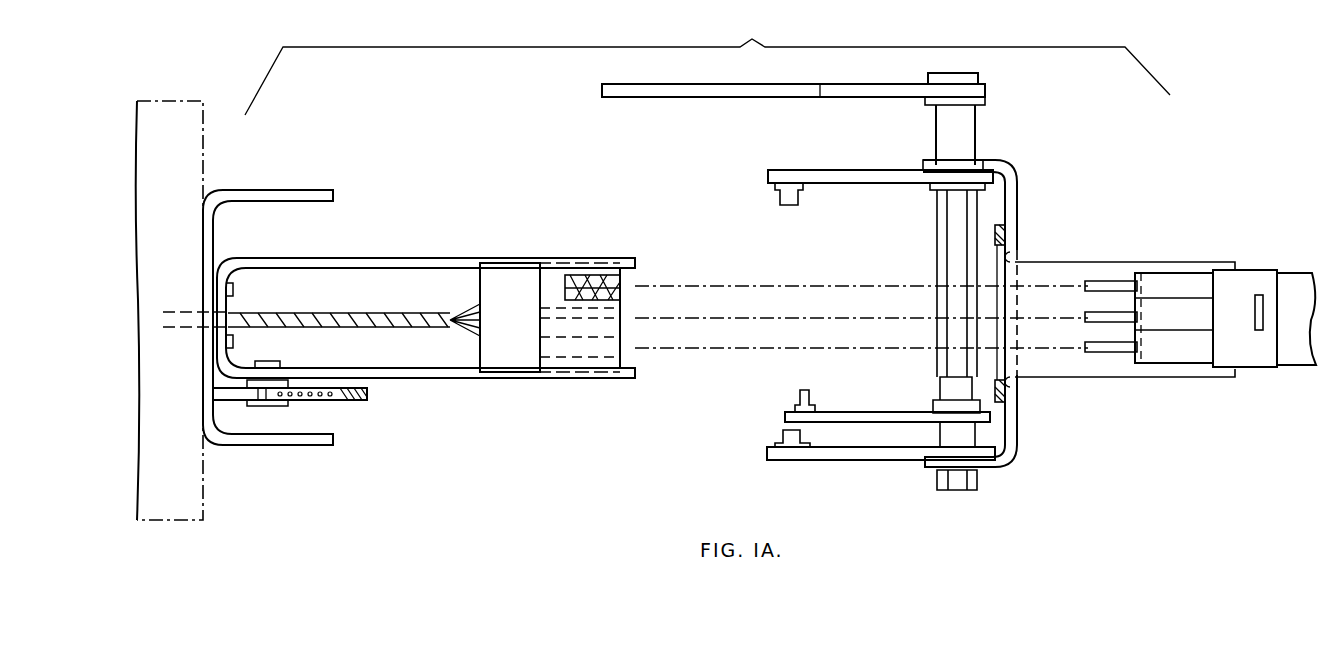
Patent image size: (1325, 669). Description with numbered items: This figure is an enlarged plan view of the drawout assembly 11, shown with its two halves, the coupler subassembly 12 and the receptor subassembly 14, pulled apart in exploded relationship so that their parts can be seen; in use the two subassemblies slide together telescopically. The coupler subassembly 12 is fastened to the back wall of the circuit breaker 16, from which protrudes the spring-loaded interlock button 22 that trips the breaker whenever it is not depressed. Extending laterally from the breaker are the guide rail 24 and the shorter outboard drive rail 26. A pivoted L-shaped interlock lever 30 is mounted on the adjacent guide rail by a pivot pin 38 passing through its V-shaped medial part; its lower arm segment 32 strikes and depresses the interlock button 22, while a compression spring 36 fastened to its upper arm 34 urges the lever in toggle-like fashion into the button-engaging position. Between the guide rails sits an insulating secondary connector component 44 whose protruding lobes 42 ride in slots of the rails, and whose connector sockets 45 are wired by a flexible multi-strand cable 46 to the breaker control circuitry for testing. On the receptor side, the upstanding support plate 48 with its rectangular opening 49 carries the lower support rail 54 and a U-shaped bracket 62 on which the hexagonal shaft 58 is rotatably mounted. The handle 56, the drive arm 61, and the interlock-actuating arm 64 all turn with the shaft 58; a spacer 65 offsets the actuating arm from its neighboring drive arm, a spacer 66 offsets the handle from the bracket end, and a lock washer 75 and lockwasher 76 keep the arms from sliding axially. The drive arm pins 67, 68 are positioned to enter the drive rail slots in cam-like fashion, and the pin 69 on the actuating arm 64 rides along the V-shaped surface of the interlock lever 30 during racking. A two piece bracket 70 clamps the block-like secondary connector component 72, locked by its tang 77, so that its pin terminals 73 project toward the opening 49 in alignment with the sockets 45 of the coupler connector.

The drawout assembly 11 is at (762, 34).
The coupler subassembly 12 is at (442, 258).
The receptor subassembly 14 is at (1020, 191).
The circuit breaker 16 is at (175, 100).
The interlock button 22 is at (210, 392).
The guide rail 24 is at (391, 258).
The drive rail 26 is at (262, 193).
The interlock lever 30 is at (300, 400).
The lower arm segment 32 is at (232, 401).
The upper arm 34 is at (356, 397).
The compression spring 36 is at (300, 389).
The pivot pin 38 is at (270, 362).
The protruding lobes 42 is at (517, 262).
The secondary connector component 44 is at (512, 348).
The connector sockets 45 is at (578, 282).
The multi-strand cable 46 is at (392, 315).
The support plate 48 is at (997, 240).
The rectangular opening 49 is at (1043, 268).
The lower support rail 54 is at (1082, 381).
The handle 56 is at (692, 92).
The shaft 58 is at (938, 333).
The drive arm 61 is at (900, 458).
The U-shaped bracket 62 is at (1020, 426).
The interlock-actuating arm 64 is at (865, 411).
The spacer 65 is at (945, 432).
The spacer 66 is at (962, 129).
The pin 67 is at (786, 437).
The pin 68 is at (783, 196).
The pin 69 is at (798, 398).
The two piece bracket 70 is at (1296, 283).
The secondary connector component 72 is at (1254, 352).
The pin terminals 73 is at (1085, 348).
The lock washer 75 is at (925, 185).
The lockwasher 76 is at (897, 390).
The tang 77 is at (1257, 312).